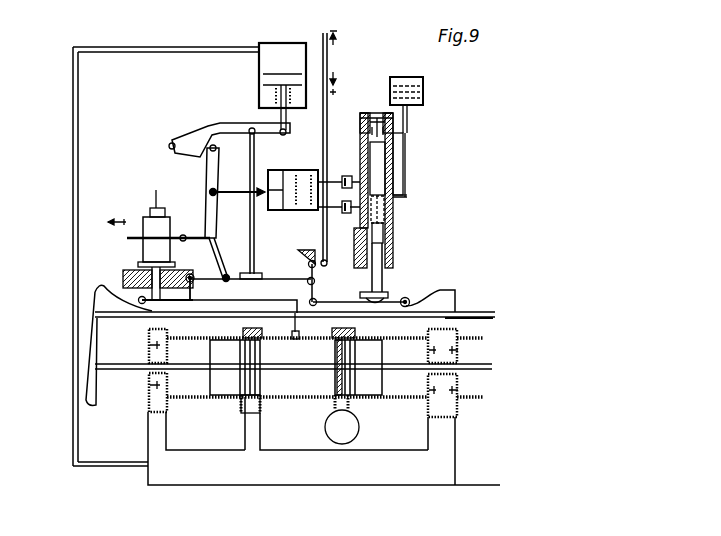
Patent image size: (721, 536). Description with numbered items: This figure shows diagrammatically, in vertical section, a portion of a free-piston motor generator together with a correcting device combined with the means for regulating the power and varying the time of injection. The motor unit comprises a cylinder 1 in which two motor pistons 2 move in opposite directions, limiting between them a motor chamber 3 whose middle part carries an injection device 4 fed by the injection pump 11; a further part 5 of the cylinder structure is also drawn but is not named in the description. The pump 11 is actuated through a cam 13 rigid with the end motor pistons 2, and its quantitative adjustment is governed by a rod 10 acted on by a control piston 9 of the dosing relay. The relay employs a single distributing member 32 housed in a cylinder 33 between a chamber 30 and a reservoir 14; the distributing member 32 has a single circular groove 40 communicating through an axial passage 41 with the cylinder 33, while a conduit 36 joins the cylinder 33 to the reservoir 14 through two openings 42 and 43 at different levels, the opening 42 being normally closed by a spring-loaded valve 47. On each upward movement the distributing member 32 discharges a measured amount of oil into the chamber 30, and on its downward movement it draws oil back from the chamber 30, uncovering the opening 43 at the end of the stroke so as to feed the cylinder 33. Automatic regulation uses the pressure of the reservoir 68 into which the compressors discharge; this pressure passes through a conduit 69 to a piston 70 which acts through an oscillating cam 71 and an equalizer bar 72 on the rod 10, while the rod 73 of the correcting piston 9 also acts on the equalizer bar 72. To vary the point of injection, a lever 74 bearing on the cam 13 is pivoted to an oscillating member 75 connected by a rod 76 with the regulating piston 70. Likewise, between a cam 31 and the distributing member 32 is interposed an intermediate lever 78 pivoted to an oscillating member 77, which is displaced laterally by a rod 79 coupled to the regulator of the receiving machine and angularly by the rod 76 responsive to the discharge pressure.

The cylinder 1 is at (470, 400).
The motor pistons 2 is at (228, 385).
The motor chamber 3 is at (318, 375).
The injection device 4 is at (294, 339).
The bearing 5 is at (192, 382).
The control piston 9 is at (290, 176).
The quantitative adjustment rod 10 is at (157, 205).
The injection pump 11 is at (155, 250).
The cam 13 is at (96, 294).
The reservoir 14 is at (412, 90).
The chamber 30 is at (300, 180).
The cam 31 is at (446, 290).
The distributing member 32 is at (385, 270).
The cylinder 33 is at (378, 168).
The conduit 36 is at (395, 160).
The circular groove 40 is at (384, 232).
The axial passage 41 is at (395, 212).
The opening 42 is at (407, 197).
The opening 43 is at (380, 124).
The valve 47 is at (396, 133).
The reservoir 68 is at (178, 465).
The conduit 69 is at (73, 100).
The piston 70 is at (272, 80).
The cam 71 is at (198, 136).
The equalizer bar 72 is at (205, 173).
The rod 73 is at (236, 194).
The lever 74 is at (170, 300).
The oscillating member 75 is at (225, 276).
The rod 76 is at (255, 239).
The oscillating member 77 is at (279, 279).
The intermediate lever 78 is at (406, 297).
The rod 79 is at (327, 110).